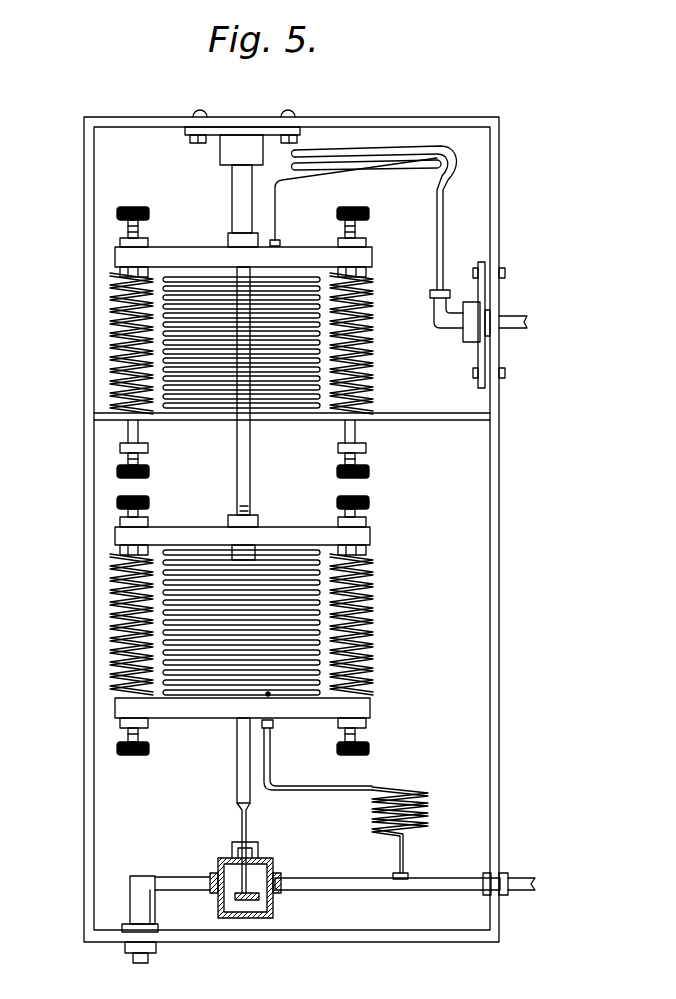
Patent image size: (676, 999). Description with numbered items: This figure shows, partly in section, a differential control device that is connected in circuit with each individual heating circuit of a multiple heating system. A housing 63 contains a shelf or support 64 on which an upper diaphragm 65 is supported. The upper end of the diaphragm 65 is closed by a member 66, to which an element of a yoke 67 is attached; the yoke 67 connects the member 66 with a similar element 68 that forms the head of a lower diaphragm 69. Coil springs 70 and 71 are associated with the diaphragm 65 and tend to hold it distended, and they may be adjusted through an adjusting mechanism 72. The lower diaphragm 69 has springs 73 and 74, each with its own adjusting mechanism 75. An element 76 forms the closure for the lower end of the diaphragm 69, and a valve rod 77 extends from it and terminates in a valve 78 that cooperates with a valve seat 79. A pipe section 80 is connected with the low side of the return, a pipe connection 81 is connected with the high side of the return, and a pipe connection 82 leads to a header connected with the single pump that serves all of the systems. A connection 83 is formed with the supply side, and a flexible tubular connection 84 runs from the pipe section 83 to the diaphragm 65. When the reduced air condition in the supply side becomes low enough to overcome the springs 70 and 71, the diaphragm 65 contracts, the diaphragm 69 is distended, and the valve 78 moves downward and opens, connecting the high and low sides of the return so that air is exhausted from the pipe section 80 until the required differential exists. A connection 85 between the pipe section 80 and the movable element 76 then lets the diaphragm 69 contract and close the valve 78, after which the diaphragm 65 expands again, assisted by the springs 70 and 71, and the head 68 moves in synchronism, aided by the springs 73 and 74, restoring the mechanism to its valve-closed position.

The housing 63 is at (499, 474).
The shelf or support 64 is at (424, 416).
The diaphragm 65 is at (214, 400).
The member 66 is at (304, 262).
The yoke 67 is at (236, 457).
The element 68 is at (283, 531).
The diaphragm 69 is at (198, 556).
The coil spring 70 is at (366, 352).
The coil spring 71 is at (125, 334).
The adjusting mechanism 72 is at (356, 235).
The spring 73 is at (371, 579).
The spring 74 is at (120, 601).
The adjusting mechanism 75 is at (369, 506).
The element 76 is at (200, 712).
The valve rod 77 is at (238, 783).
The valve 78 is at (233, 897).
The valve seat 79 is at (268, 898).
The pipe section 80 is at (332, 888).
The pipe connection 81 is at (177, 885).
The pipe connection 82 is at (122, 955).
The connection 83 is at (513, 330).
The flexible tubular connection 84 is at (442, 202).
The connection 85 is at (404, 794).